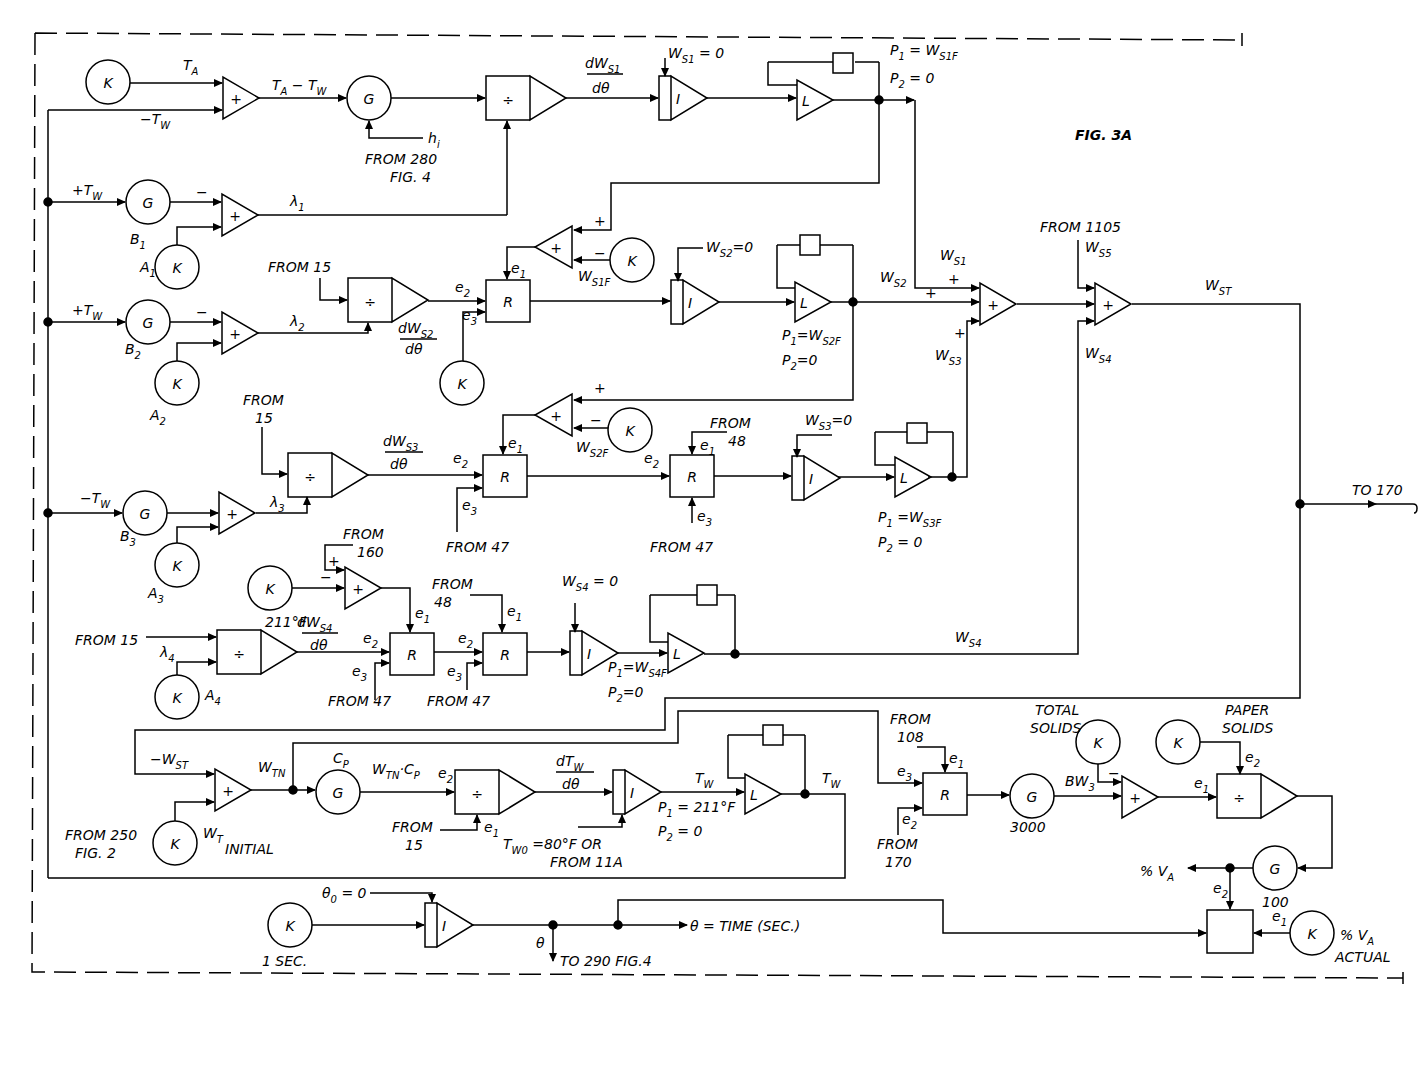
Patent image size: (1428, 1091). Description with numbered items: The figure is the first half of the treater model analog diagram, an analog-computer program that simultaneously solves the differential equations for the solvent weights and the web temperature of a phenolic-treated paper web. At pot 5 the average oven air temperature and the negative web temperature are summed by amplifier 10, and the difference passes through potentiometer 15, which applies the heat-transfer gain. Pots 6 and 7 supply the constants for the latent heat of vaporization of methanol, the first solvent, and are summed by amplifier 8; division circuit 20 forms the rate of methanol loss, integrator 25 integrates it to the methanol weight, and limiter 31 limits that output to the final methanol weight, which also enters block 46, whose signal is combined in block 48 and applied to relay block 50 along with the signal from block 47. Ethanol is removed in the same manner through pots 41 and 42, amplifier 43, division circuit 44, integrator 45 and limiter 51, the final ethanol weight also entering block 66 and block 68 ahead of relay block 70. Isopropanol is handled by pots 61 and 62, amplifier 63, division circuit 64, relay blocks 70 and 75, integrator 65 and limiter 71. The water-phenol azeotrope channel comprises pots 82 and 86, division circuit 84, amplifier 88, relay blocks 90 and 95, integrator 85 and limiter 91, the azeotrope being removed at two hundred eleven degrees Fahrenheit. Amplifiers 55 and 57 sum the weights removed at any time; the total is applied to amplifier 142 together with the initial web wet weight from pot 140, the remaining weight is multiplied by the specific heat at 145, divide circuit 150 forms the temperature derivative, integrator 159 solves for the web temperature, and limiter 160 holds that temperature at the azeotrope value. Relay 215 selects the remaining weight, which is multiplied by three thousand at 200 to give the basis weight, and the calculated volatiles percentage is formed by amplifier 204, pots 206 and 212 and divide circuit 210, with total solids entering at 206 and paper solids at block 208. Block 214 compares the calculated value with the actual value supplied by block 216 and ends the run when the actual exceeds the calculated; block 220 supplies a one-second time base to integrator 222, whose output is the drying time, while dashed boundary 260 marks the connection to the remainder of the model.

The pot 5 is at (125, 65).
The amplifier 10 is at (235, 80).
The potentiometer 15 is at (380, 78).
The division circuit 20 is at (515, 77).
The integrator 25 is at (687, 114).
The limiter 31 is at (820, 114).
The pot 6 is at (160, 182).
The amplifier 8 is at (232, 197).
The pot 7 is at (198, 262).
The block 46 is at (638, 238).
The summer 48 is at (548, 232).
The gain G B2 41 is at (138, 301).
The summer 43 is at (232, 315).
The constant K A2 42 is at (155, 380).
The divider 44 is at (375, 278).
The constant K 47 is at (440, 380).
The relay R 50 is at (505, 323).
The integrator 45 is at (700, 318).
The limiter 51 is at (810, 290).
The amplifier 55 is at (995, 322).
The amplifier 57 is at (1112, 286).
The gain G B3 61 is at (135, 492).
The summer 63 is at (222, 493).
The constant K A3 62 is at (155, 563).
The divider 64 is at (302, 453).
The block 66 is at (652, 418).
The summer 68 is at (548, 402).
The relay R 70 is at (492, 454).
The relay R 75 is at (670, 490).
The integrator 65 is at (818, 494).
The limiter 71 is at (912, 465).
The constant K A4 82 is at (155, 685).
The divider 84 is at (240, 674).
The constant K 211F 86 is at (262, 566).
The summer 88 is at (375, 572).
The relay R 90 is at (434, 634).
The relay R 95 is at (518, 676).
The integrator 85 is at (596, 636).
The limiter 91 is at (685, 636).
The pot 140 is at (165, 820).
The amplifier 142 is at (232, 770).
The Cp multiplier 145 is at (318, 801).
The divide circuit 150 is at (500, 766).
The integrator 159 is at (636, 772).
The limiter 160 is at (760, 776).
The relay 215 is at (965, 776).
The multiplier 200 is at (1020, 775).
The pot 206 is at (1083, 758).
The amplifier 204 is at (1145, 810).
The block 208 is at (1160, 727).
The divide circuit 210 is at (1275, 778).
The pot 212 is at (1290, 850).
The comparator block 214 is at (1207, 912).
The block 216 is at (1328, 915).
The time base block 220 is at (268, 911).
The integrator 222 is at (448, 905).
The dashed boundary to FIG. 4 260 is at (1085, 40).